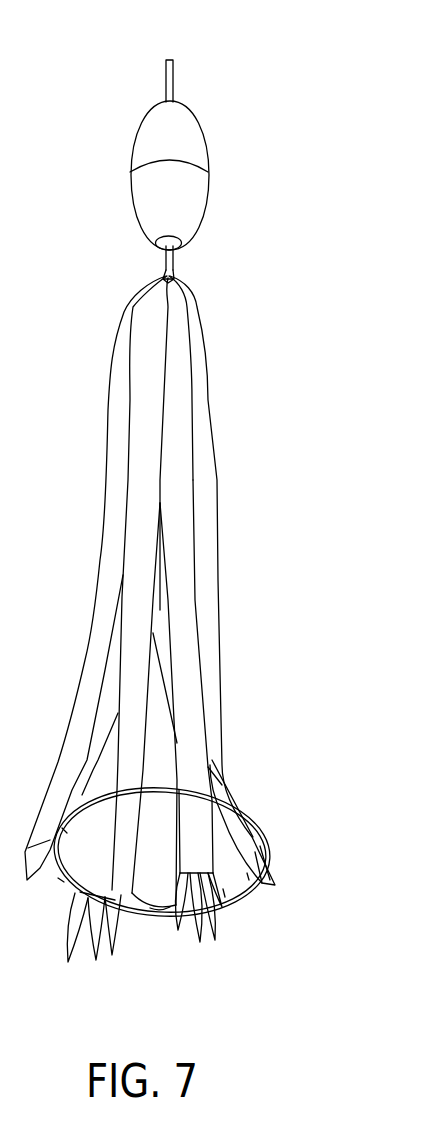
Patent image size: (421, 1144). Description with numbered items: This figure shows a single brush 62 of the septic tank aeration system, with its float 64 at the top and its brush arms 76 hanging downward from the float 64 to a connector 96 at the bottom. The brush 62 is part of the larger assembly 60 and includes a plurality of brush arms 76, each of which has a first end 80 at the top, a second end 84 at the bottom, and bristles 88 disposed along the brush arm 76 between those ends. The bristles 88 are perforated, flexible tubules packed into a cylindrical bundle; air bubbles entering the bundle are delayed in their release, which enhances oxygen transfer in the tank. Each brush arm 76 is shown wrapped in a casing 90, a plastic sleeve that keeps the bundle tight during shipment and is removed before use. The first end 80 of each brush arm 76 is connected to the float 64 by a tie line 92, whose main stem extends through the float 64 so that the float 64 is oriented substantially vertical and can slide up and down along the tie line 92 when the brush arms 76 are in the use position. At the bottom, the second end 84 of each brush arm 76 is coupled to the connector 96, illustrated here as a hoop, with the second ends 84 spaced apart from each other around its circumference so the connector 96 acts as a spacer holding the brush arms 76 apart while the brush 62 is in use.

The fishing lure assembly 60 is at (290, 72).
The tie line 92 is at (172, 82).
The float 64 is at (176, 155).
The first end 80 is at (182, 297).
The brush 62 is at (272, 389).
The bristles 88 is at (182, 325).
The brush arm 76 is at (208, 505).
The casing 90 is at (213, 735).
The second end 84 is at (270, 868).
The connector 96 is at (157, 912).